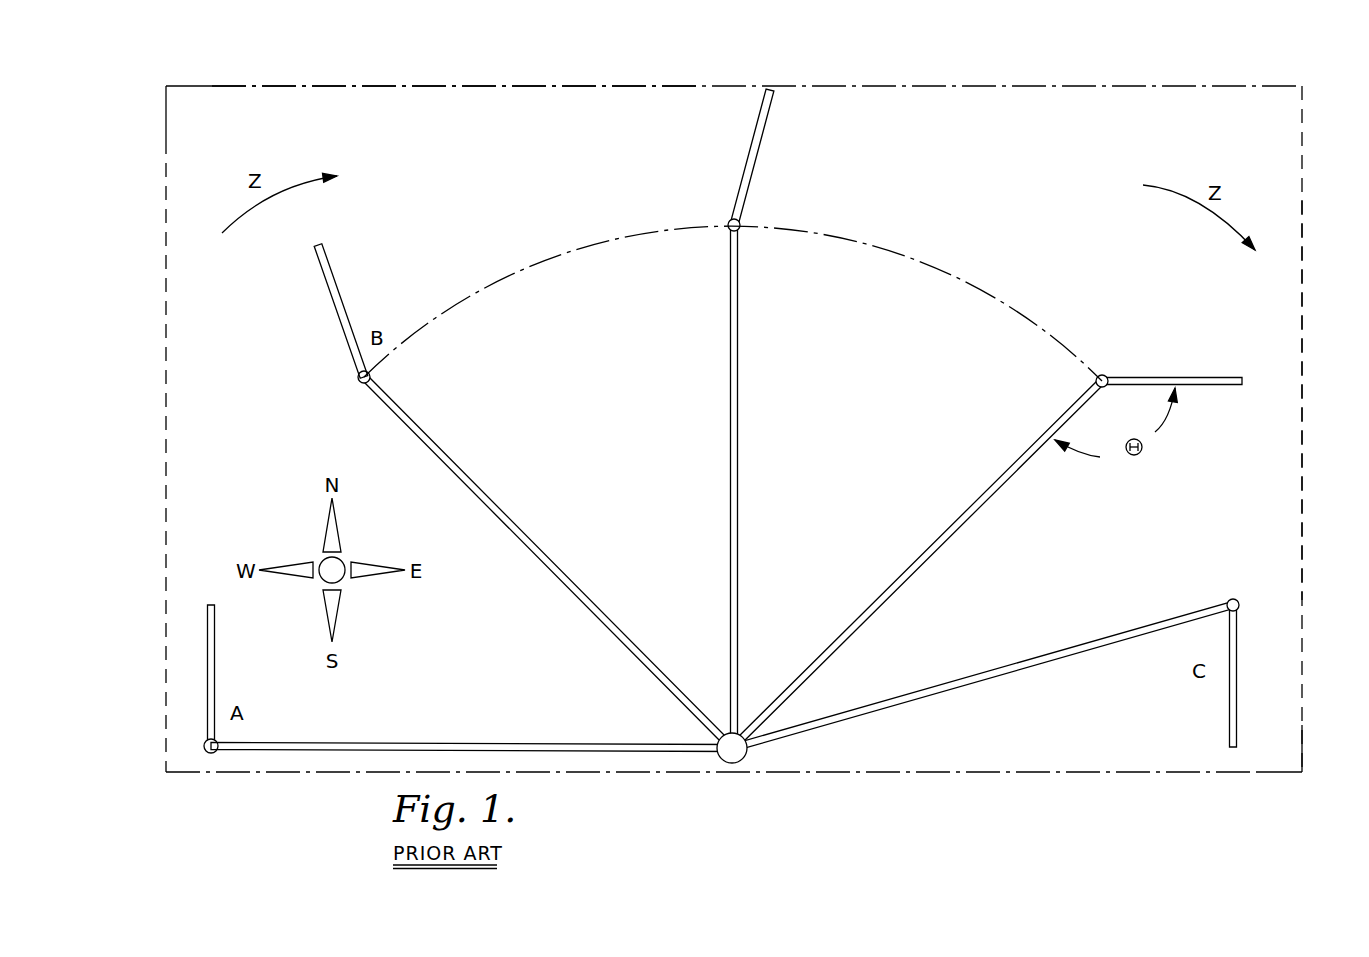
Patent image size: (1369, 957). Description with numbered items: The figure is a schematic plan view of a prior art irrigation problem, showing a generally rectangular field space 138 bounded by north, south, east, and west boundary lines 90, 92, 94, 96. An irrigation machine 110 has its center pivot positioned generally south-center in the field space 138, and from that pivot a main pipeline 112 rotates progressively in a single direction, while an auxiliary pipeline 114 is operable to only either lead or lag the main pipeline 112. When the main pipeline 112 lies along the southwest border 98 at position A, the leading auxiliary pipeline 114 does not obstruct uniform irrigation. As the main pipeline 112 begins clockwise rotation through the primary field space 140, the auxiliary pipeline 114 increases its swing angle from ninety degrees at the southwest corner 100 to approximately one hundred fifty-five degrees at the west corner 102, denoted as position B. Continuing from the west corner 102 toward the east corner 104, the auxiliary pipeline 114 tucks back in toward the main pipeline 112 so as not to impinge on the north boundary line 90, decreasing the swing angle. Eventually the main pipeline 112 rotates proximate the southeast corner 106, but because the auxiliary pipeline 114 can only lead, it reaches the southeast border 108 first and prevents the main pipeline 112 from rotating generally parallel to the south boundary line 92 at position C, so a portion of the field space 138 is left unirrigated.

The north boundary line 90 is at (1195, 87).
The south boundary line 92 is at (975, 773).
The east boundary line 94 is at (1303, 355).
The west boundary line 96 is at (166, 363).
The southwest border 98 is at (163, 706).
The southwest corner 100 is at (315, 708).
The west corner 102 is at (302, 125).
The east corner 104 is at (1225, 132).
The southeast corner 106 is at (1170, 726).
The southeast border 108 is at (1305, 698).
The irrigation machine 110 is at (935, 213).
The main pipeline 112 is at (560, 566).
The auxiliary pipeline 114 is at (338, 277).
The field space 138 is at (540, 118).
The primary field space 140 is at (648, 415).